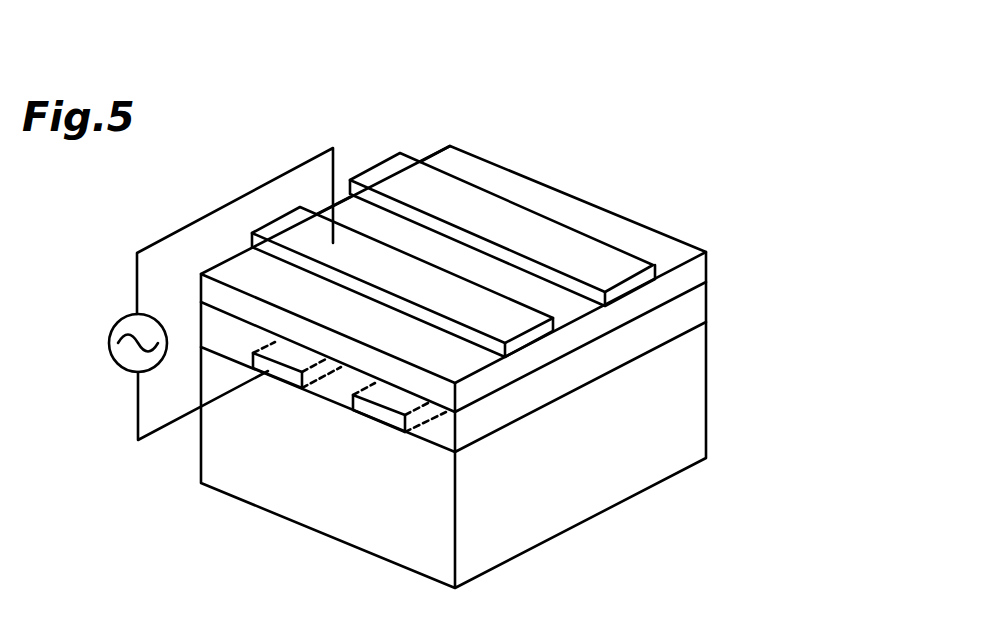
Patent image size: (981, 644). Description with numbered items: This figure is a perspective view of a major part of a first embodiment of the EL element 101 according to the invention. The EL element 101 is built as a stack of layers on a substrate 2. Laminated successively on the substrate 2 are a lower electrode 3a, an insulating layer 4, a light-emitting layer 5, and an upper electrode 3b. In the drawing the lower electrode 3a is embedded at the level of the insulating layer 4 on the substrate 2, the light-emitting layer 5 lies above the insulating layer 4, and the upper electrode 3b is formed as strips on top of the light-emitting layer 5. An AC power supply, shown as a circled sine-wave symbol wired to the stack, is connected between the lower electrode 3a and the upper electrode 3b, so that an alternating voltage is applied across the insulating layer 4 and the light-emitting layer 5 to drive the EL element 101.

The EL element 101 is at (582, 127).
The substrate 2 is at (708, 413).
The insulating layer 4 is at (706, 310).
The light-emitting layer 5 is at (706, 265).
The lower electrode 3a is at (390, 423).
The upper electrode 3b is at (570, 250).